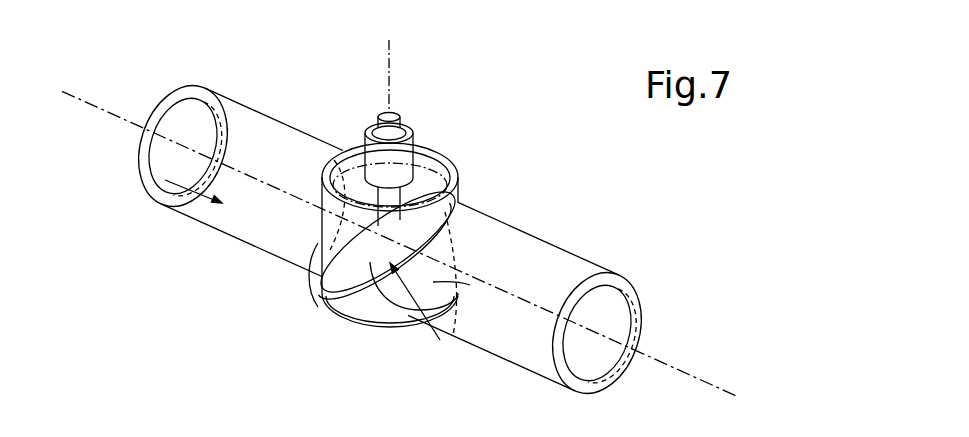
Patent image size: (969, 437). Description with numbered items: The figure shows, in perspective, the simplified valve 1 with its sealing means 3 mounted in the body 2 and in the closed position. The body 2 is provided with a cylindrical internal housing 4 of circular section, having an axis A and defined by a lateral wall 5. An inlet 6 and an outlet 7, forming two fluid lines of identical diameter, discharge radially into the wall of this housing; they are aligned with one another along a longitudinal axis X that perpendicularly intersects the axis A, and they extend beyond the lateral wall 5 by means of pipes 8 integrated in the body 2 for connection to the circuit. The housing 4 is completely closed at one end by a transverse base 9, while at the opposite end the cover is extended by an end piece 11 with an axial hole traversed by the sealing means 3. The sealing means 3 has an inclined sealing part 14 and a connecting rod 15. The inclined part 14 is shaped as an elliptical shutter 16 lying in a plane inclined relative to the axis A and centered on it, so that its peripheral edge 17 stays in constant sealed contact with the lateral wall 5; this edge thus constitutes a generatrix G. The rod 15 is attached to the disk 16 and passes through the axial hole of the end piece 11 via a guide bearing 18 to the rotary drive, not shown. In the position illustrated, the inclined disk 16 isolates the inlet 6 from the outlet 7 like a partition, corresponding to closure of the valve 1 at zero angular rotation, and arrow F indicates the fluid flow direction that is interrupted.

The valve 1 is at (510, 175).
The body 2 is at (429, 138).
The sealing means 3 is at (333, 153).
The internal housing 4 is at (465, 285).
The lateral wall 5 is at (433, 168).
The inlet 6 is at (340, 229).
The outlet 7 is at (450, 238).
The pipes 8 is at (230, 100).
The transverse base 9 is at (372, 336).
The end piece 11 is at (374, 128).
The inclined sealing part 14 is at (398, 305).
The connecting rod 15 is at (397, 110).
The elliptical shutter 16 is at (327, 317).
The peripheral edge 17 is at (313, 250).
The guide bearing 18 is at (361, 222).
The longitudinal axis X is at (72, 96).
The axis A is at (389, 60).
The flow direction F is at (193, 180).
The generatrix G is at (266, 292).